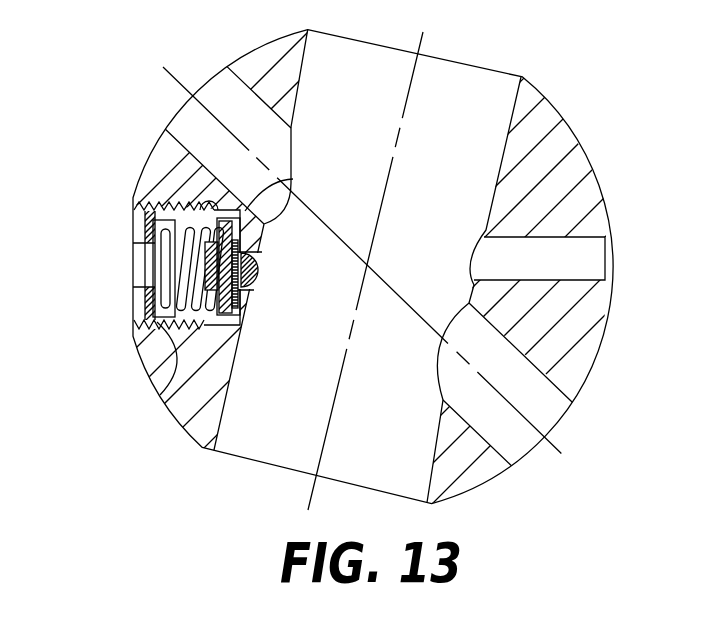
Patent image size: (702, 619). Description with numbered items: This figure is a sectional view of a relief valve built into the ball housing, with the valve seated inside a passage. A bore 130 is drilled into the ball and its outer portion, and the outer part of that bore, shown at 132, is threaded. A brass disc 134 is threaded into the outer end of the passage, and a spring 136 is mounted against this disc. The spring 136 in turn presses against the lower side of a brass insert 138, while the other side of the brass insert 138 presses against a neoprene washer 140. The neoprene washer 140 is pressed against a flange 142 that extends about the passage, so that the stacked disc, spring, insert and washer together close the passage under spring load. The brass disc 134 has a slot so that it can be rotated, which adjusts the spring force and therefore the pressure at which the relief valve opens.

The bore 130 is at (217, 208).
The threaded outer portion 132 is at (157, 195).
The brass disc 134 is at (143, 303).
The spring 136 is at (152, 375).
The brass insert 138 is at (293, 179).
The neoprene washer 140 is at (242, 247).
The flange 142 is at (245, 307).